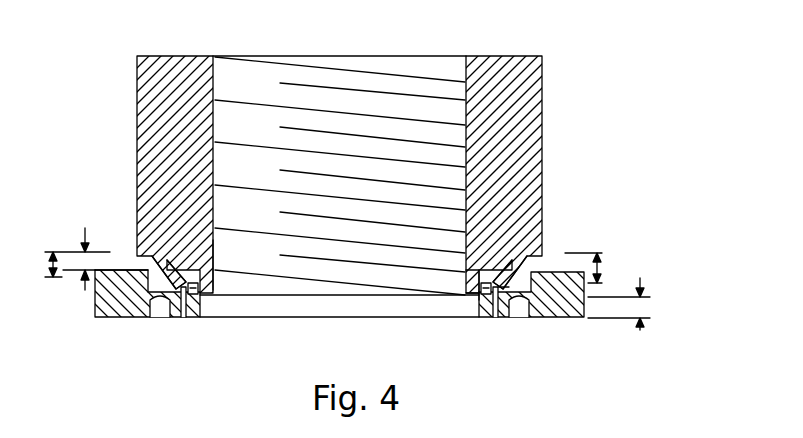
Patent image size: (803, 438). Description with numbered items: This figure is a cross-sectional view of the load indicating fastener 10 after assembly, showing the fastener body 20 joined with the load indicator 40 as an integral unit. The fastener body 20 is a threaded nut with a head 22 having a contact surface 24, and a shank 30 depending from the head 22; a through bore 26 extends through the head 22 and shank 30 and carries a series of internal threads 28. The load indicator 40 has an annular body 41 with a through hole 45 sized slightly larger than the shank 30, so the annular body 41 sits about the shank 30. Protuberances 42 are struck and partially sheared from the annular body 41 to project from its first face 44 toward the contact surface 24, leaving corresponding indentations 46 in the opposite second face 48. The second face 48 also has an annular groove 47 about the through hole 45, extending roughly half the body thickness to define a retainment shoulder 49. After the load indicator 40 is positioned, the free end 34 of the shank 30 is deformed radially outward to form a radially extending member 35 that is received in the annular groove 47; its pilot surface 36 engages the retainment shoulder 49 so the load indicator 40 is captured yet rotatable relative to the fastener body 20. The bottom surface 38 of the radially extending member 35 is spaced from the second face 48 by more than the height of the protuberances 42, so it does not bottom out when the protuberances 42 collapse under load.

The load indicating fastener 10 is at (628, 150).
The fastener body 20 is at (553, 88).
The head 22 is at (542, 137).
The contact surface 24 is at (515, 262).
The through bore 26 is at (401, 50).
The internal threads 28 is at (282, 62).
The shank 30 is at (224, 262).
The free end of shank 34 is at (497, 318).
The radially extending member 35 is at (476, 310).
The pilot surface 36 is at (510, 318).
The bottom surface 38 is at (485, 318).
The load indicator 40 is at (114, 332).
The annular body 41 is at (95, 300).
The protuberances 42 is at (537, 263).
The first face 44 is at (122, 268).
The through hole 45 is at (315, 328).
The indentations 46 is at (160, 318).
The annular groove 47 is at (183, 310).
The second face 48 is at (577, 318).
The retainment shoulder 49 is at (193, 312).